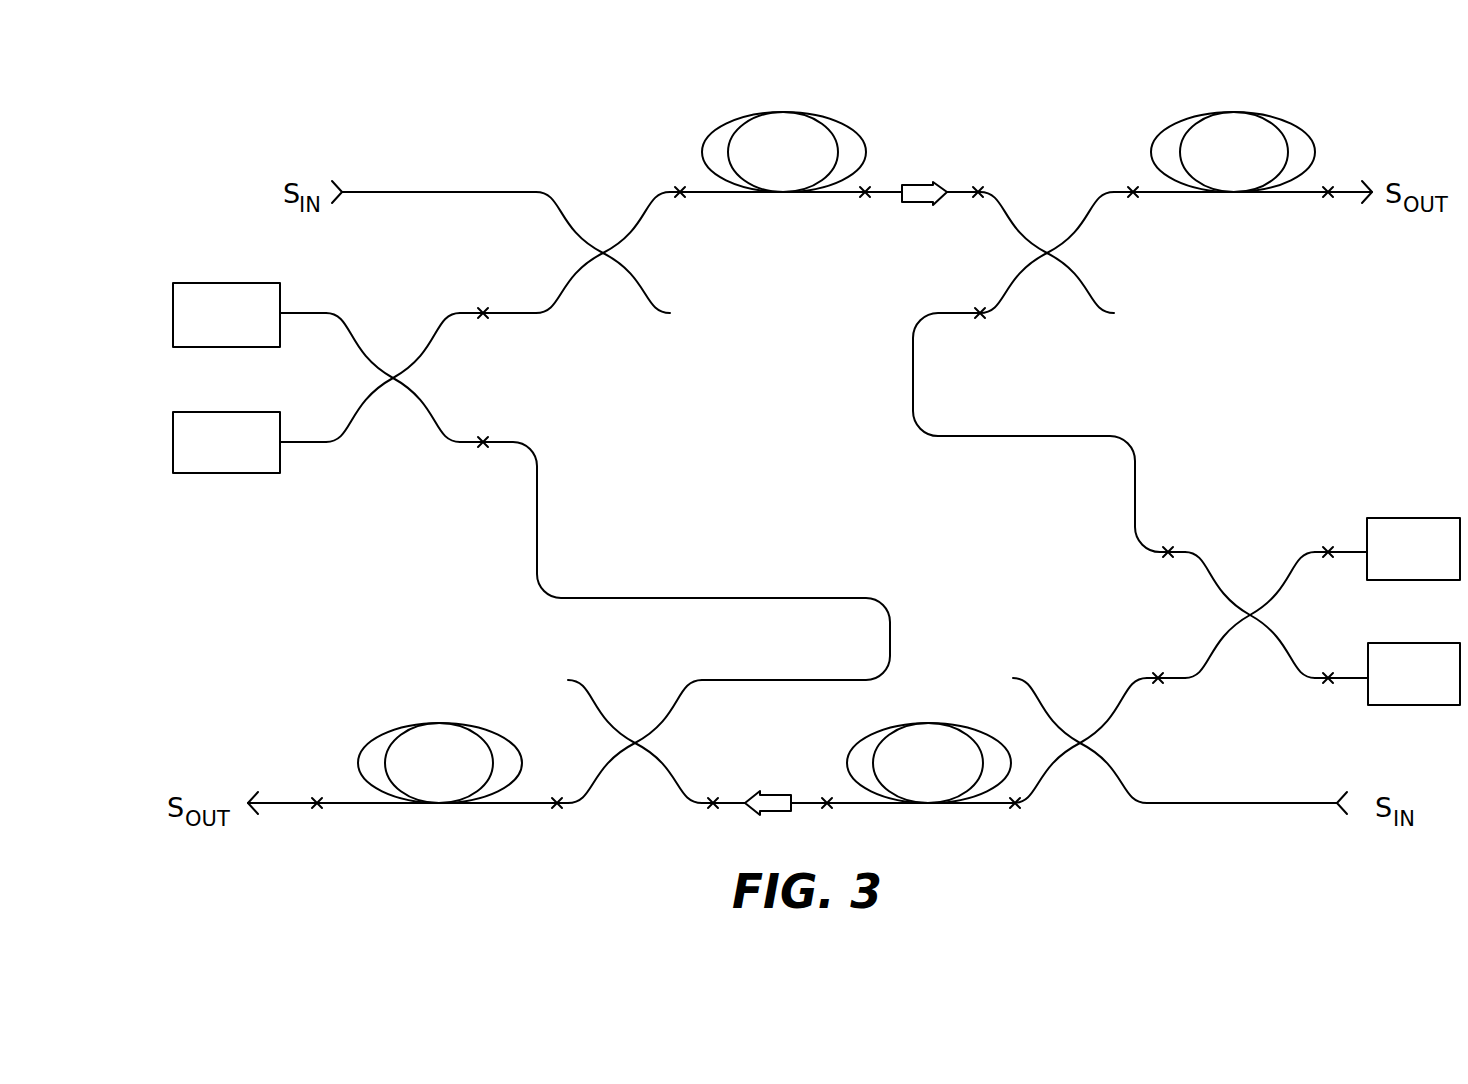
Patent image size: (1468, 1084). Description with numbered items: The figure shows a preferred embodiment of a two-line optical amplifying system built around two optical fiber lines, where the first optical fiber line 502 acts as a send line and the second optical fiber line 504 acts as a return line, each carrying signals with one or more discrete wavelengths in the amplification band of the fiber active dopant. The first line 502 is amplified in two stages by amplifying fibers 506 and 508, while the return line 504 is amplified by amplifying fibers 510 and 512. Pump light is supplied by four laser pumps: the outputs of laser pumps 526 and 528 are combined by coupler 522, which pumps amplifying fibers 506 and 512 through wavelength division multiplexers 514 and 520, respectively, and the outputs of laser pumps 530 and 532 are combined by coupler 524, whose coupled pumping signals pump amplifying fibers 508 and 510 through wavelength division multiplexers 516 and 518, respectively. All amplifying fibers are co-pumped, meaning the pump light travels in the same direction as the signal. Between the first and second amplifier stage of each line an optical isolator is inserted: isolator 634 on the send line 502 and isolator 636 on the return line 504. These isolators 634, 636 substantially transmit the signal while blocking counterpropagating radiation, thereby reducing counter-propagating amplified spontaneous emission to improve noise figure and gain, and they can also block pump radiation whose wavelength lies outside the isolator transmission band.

The first optical fiber line 502 is at (432, 190).
The second optical fiber line 504 is at (270, 800).
The amplifying fiber 506 is at (783, 112).
The amplifying fiber 508 is at (1231, 112).
The amplifying fiber 510 is at (935, 723).
The amplifying fiber 512 is at (436, 723).
The wavelength division multiplexer 514 is at (598, 240).
The wavelength division multiplexer 516 is at (1045, 240).
The wavelength division multiplexer 518 is at (1080, 735).
The wavelength division multiplexer 520 is at (627, 717).
The coupler 522 is at (392, 365).
The coupler 524 is at (1243, 600).
The laser pump 526 is at (228, 293).
The laser pump 528 is at (238, 465).
The laser pump 530 is at (1395, 522).
The laser pump 532 is at (1405, 695).
The optical isolator 634 is at (917, 197).
The optical isolator 636 is at (768, 797).